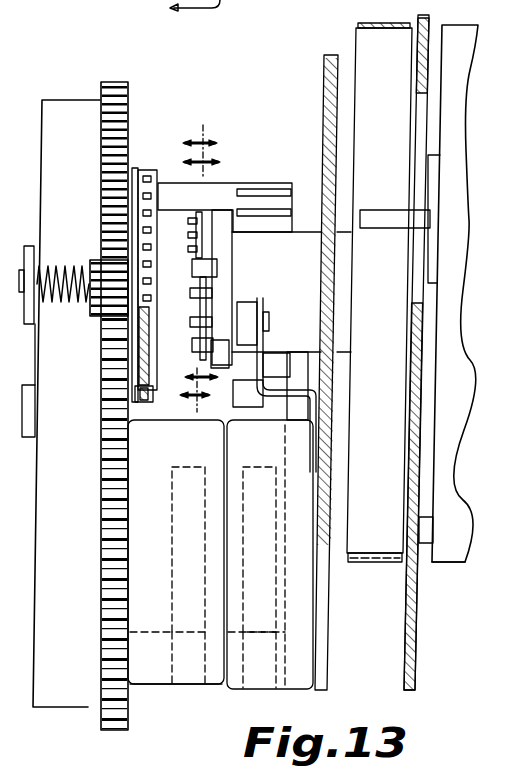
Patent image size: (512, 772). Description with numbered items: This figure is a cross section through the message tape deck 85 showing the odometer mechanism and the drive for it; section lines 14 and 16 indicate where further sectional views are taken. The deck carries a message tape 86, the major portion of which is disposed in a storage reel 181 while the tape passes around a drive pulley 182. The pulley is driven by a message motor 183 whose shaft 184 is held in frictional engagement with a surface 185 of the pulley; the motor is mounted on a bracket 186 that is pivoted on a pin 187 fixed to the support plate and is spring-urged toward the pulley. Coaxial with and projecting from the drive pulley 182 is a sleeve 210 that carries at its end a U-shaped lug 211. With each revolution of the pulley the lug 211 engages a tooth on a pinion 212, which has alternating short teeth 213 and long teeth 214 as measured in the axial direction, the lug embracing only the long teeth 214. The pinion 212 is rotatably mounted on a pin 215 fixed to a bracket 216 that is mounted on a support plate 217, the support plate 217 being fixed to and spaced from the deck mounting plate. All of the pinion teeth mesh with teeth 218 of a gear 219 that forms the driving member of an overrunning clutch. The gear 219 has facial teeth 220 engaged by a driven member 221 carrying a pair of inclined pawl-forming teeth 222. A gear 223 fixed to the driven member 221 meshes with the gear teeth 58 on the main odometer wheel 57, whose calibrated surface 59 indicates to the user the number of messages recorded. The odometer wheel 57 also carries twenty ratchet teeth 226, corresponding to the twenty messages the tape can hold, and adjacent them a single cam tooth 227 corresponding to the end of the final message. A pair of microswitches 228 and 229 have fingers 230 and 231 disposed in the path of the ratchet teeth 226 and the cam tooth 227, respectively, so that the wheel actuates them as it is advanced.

The section line 14 is at (215, 268).
The section line 16 is at (189, 269).
The odometer wheel 57 is at (88, 383).
The gear teeth 58 is at (115, 88).
The calibrated surface 59 is at (72, 132).
The message tape deck 85 is at (392, 662).
The message tape 86 is at (368, 564).
The storage reel 181 is at (435, 6).
The drive pulley 182 is at (385, 311).
The message motor 183 is at (462, 175).
The shaft 184 is at (386, 216).
The surface 185 is at (389, 96).
The bracket 186 is at (451, 557).
The pin 187 is at (433, 531).
The sleeve 210 is at (349, 292).
The U-shaped lug 211 is at (218, 269).
The pinion 212 is at (228, 303).
The short teeth 213 is at (200, 290).
The long teeth 214 is at (200, 320).
The pin 215 is at (269, 325).
The bracket 216 is at (306, 394).
The support plate 217 is at (326, 64).
The teeth 218 is at (213, 201).
The gear 219 is at (174, 238).
The facial teeth 220 is at (153, 397).
The driven member 221 is at (133, 346).
The pawl-forming teeth 222 is at (144, 420).
The gear 223 is at (98, 300).
The ratchet teeth 226 is at (273, 191).
The cam tooth 227 is at (222, 182).
The microswitch 228 is at (302, 650).
The microswitch 229 is at (157, 686).
The finger 230 is at (263, 533).
The finger 231 is at (165, 531).